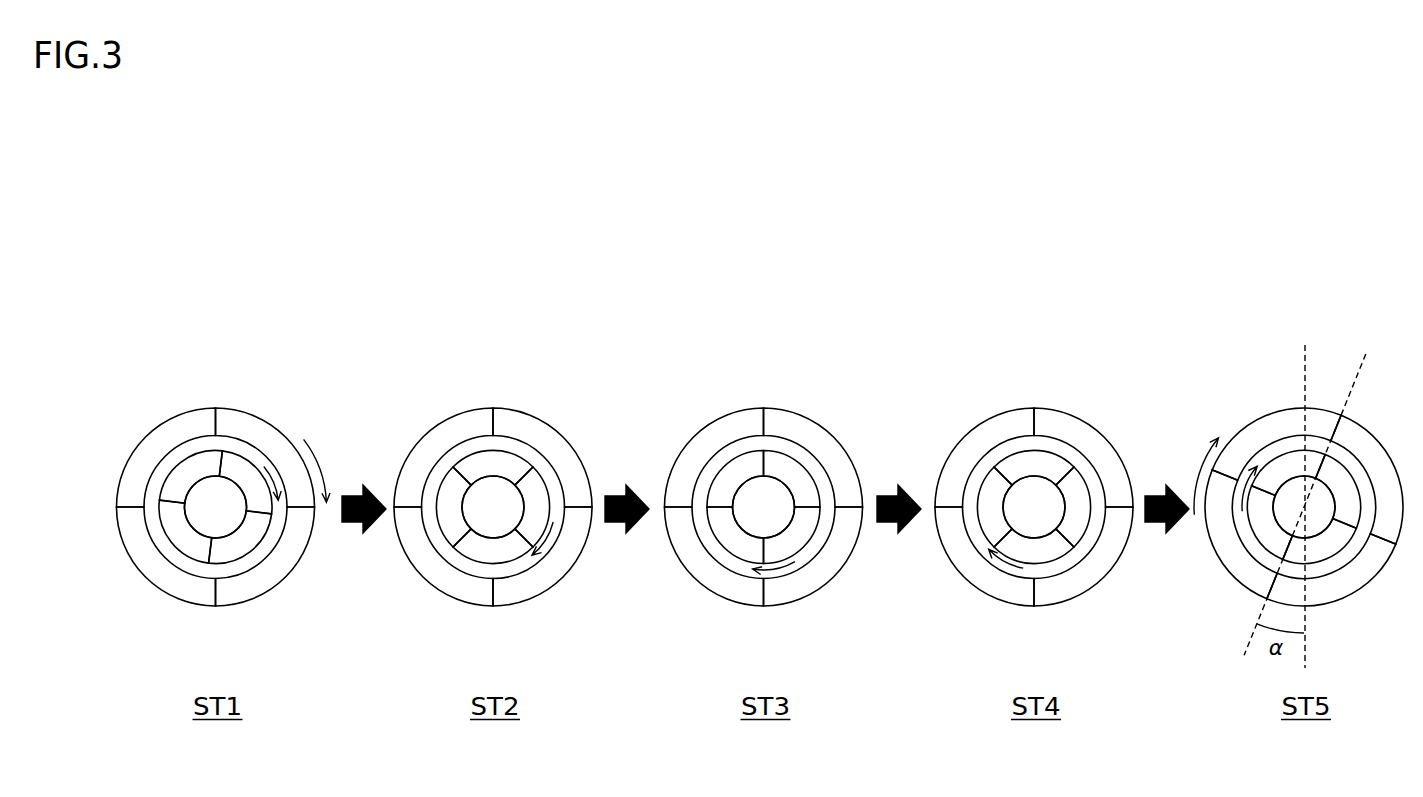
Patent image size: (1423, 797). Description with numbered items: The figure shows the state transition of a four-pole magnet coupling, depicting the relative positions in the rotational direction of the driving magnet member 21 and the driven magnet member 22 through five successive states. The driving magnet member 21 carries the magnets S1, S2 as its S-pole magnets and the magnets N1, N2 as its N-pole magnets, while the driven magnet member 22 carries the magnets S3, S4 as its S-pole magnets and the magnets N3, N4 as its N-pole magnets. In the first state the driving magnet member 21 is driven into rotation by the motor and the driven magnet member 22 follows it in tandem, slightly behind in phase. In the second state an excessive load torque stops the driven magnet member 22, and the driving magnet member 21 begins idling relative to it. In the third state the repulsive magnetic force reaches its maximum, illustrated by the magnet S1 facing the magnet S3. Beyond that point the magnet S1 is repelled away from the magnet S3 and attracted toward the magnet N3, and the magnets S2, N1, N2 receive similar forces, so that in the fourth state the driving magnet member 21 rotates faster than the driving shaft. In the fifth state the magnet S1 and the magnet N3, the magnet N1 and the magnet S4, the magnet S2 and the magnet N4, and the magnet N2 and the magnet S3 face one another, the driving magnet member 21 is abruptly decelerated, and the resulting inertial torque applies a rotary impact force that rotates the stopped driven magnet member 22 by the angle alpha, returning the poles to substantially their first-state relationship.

The driving magnet member 21 is at (201, 452).
The driven magnet member 22 is at (146, 437).
The magnet N1 is at (767, 506).
The magnet N2 is at (757, 506).
The magnet S1 is at (755, 507).
The magnet S2 is at (760, 506).
The magnet N3 is at (697, 538).
The magnet N4 is at (810, 476).
The magnet S3 is at (806, 556).
The magnet S4 is at (729, 457).